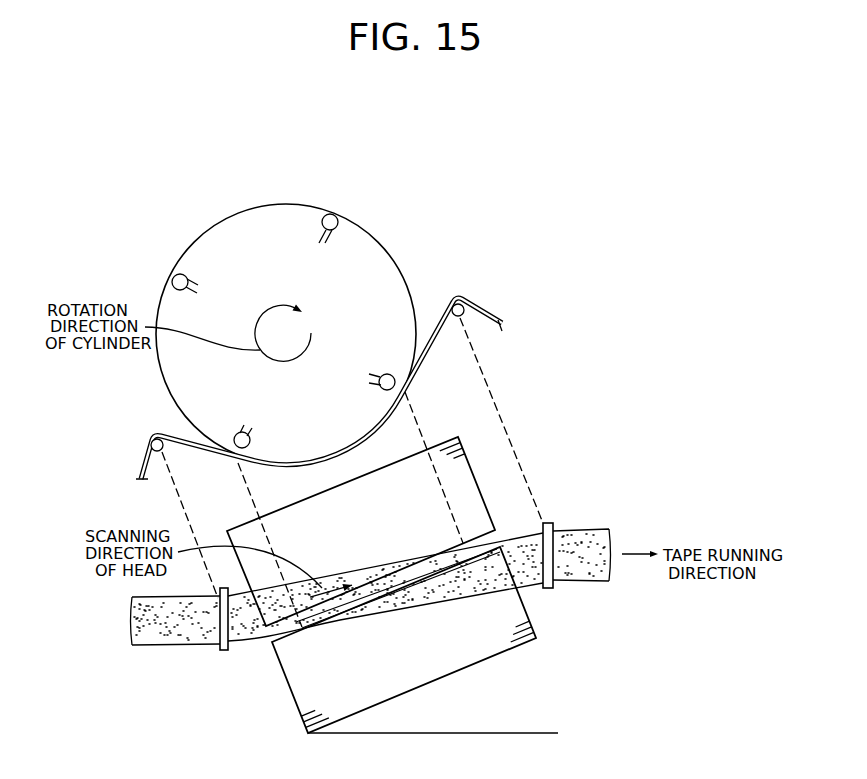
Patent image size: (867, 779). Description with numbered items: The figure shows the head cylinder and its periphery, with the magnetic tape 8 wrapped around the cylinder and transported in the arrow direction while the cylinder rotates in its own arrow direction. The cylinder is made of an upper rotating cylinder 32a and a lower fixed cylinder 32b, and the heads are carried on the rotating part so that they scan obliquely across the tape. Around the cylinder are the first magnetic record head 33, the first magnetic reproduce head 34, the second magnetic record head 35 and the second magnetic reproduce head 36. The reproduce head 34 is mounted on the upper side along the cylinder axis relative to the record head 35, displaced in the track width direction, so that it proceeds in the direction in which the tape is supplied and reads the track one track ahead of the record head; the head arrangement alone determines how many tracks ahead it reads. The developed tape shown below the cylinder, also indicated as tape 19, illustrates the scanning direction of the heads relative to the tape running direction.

The magnetic tape 8 is at (133, 468).
The magnetic tape 19 is at (168, 647).
The upper rotating cylinder 32a is at (462, 457).
The lower fixed cylinder 32b is at (496, 657).
The first magnetic record head 33 is at (347, 220).
The first magnetic reproduce head 34 is at (405, 376).
The second magnetic record head 35 is at (230, 428).
The second magnetic reproduce head 36 is at (185, 268).